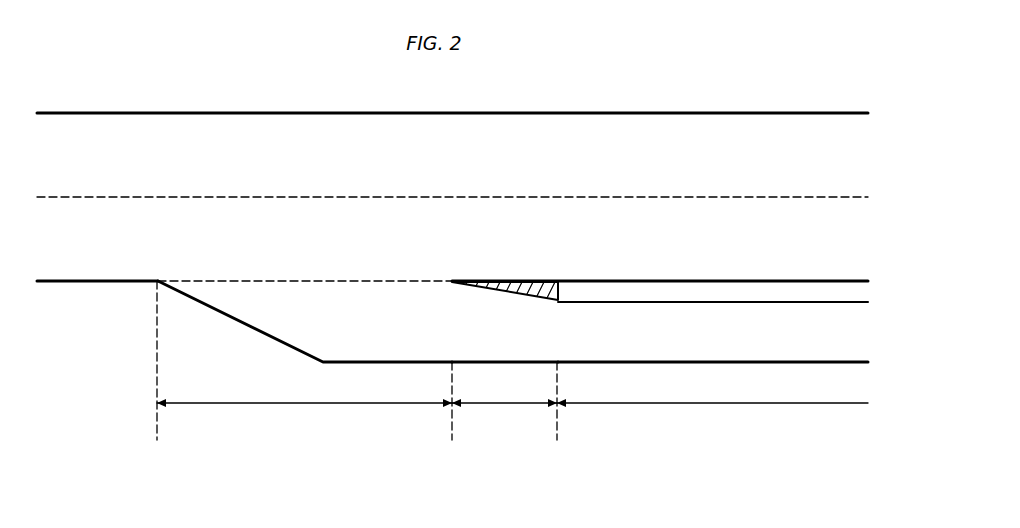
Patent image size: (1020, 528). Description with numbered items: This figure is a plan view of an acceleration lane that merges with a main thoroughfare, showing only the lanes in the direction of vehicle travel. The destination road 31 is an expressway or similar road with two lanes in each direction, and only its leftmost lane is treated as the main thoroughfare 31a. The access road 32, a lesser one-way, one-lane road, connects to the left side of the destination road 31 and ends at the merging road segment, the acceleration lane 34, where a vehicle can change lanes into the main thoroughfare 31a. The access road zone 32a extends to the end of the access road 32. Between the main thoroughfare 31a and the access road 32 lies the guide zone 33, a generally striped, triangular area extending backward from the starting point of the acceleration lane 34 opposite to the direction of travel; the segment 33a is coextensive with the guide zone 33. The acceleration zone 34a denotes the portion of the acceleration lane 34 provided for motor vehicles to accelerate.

The destination road 31 is at (660, 113).
The main thoroughfare 31a is at (90, 260).
The access road 32 is at (750, 346).
The access road zone 32a is at (622, 403).
The guide zone 33 is at (525, 283).
The segment of the road coextensive with the guide zone 33a is at (480, 403).
The acceleration lane 34 is at (377, 352).
The acceleration zone 34a is at (240, 403).